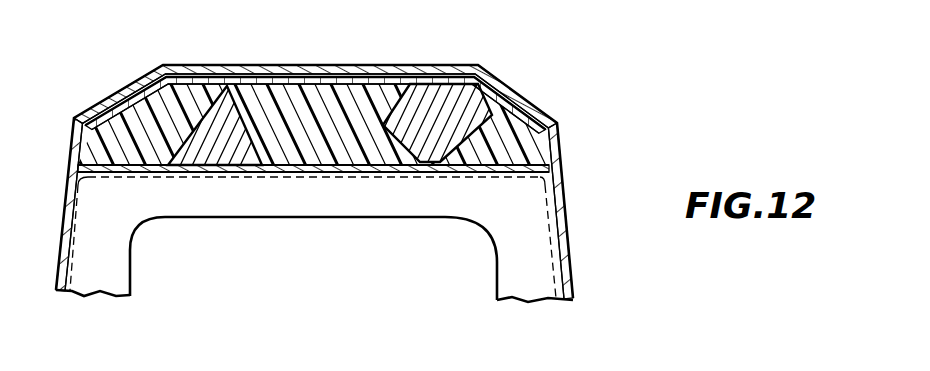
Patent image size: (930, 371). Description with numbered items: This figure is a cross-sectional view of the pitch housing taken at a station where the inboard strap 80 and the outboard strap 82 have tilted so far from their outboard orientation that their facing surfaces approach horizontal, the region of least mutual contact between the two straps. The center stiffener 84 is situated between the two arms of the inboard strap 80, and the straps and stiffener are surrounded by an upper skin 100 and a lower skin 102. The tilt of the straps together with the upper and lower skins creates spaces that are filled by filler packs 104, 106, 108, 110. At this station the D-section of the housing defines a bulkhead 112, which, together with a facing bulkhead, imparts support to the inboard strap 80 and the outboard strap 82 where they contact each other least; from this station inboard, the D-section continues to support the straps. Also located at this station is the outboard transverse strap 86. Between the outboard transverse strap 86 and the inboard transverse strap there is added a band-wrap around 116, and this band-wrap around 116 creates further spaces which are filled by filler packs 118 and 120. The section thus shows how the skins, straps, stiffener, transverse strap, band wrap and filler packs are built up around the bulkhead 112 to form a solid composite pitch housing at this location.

The inboard strap 80 is at (210, 130).
The outboard strap 82 is at (128, 164).
The center stiffener 84 is at (347, 97).
The outboard transverse strap 86 is at (527, 97).
The upper skin 100 is at (118, 97).
The lower skin 102 is at (80, 128).
The filler pack 104 is at (163, 163).
The filler pack 106 is at (476, 158).
The filler pack 108 is at (442, 85).
The filler pack 110 is at (175, 64).
The bulkhead 112 is at (537, 262).
The band-wrap around 116 is at (563, 215).
The filler pack 118 is at (80, 115).
The filler pack 120 is at (560, 164).